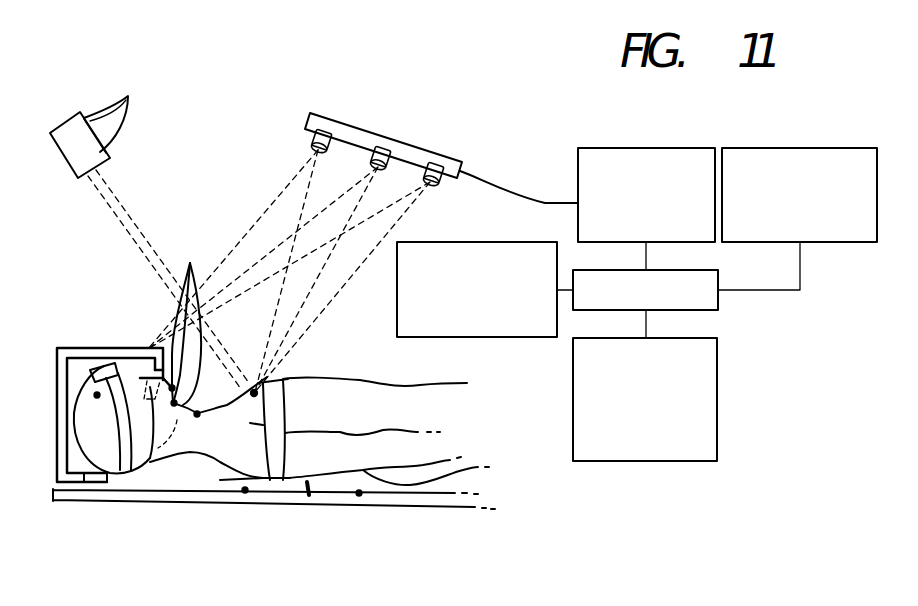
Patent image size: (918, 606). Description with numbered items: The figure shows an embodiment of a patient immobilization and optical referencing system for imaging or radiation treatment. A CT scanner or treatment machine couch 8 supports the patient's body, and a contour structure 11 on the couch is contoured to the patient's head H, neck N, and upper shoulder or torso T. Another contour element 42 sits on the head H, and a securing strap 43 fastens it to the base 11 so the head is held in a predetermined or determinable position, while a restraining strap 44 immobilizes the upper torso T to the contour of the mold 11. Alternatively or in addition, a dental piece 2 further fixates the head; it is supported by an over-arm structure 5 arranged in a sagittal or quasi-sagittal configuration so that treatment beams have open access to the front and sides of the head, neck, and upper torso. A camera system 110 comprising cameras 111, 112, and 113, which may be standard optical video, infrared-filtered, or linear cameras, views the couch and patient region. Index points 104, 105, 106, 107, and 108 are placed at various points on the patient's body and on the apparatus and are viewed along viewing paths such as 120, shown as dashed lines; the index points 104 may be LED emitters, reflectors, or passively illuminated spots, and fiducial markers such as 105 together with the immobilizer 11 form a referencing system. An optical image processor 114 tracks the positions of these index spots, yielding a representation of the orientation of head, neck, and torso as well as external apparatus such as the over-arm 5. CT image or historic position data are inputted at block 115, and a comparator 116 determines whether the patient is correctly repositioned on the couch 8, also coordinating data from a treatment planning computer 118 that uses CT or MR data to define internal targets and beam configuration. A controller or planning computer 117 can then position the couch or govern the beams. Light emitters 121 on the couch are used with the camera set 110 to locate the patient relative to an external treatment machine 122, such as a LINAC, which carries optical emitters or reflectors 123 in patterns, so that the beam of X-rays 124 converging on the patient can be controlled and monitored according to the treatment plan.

The dental piece 2 is at (152, 463).
The over-arm structure 5 is at (57, 400).
The couch 8 is at (53, 498).
The contour structure 11 is at (172, 482).
The contour element 42 is at (97, 367).
The securing strap 43 is at (123, 440).
The restraining strap 44 is at (280, 462).
The index point 104 is at (97, 395).
The index point 105 is at (150, 352).
The index point 106 is at (191, 319).
The index point 107 is at (197, 413).
The index point 108 is at (254, 393).
The camera system 110 is at (335, 120).
The camera 111 is at (311, 139).
The camera 112 is at (384, 148).
The camera 113 is at (434, 160).
The optical image processor 114 is at (645, 148).
The CT image or historic position data block 115 is at (797, 148).
The comparator 116 is at (697, 312).
The controller or planning computer 117 is at (718, 421).
The treatment planning computer 118 is at (450, 337).
The viewing path 120 is at (250, 226).
The light emitters 121 is at (245, 492).
The treatment machine 122 is at (49, 137).
The optical emitters or reflectors 123 is at (130, 104).
The beam of X-rays 124 is at (105, 200).
The head H is at (150, 428).
The neck N is at (190, 453).
The torso T is at (254, 470).